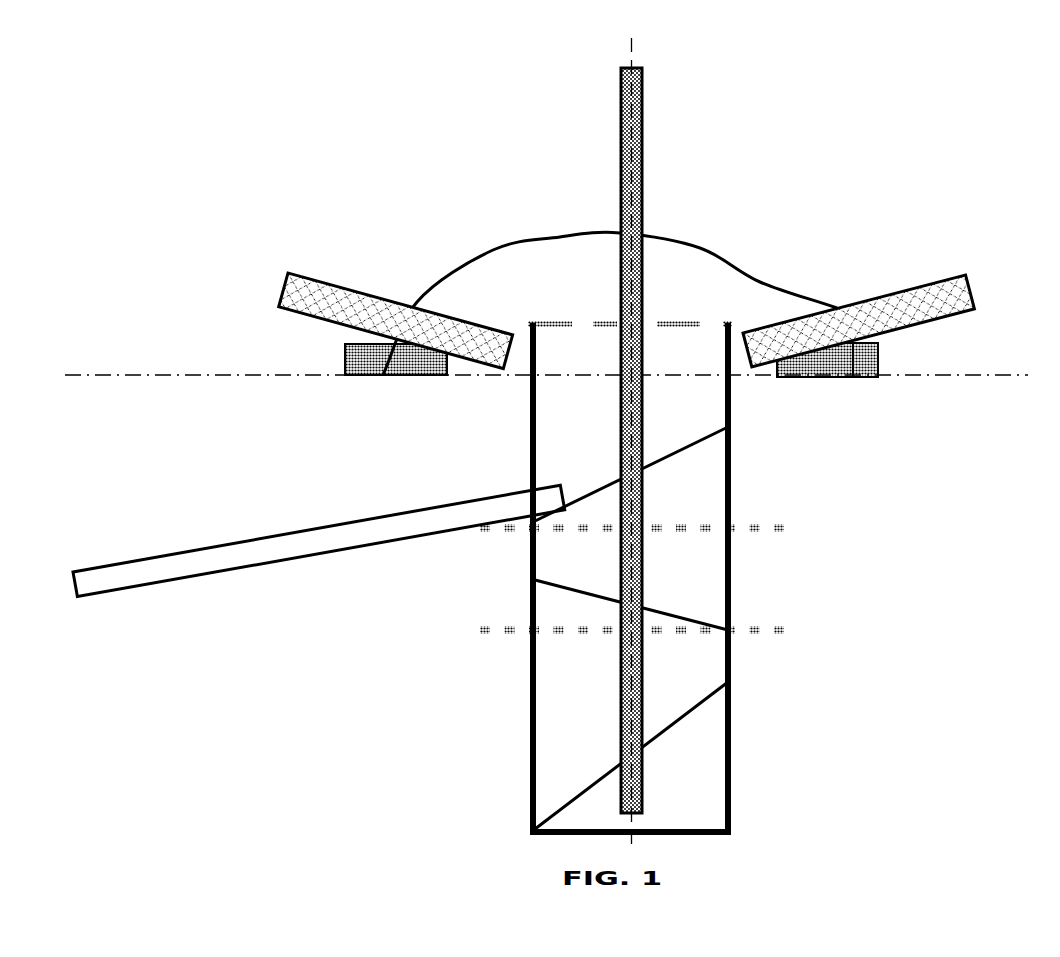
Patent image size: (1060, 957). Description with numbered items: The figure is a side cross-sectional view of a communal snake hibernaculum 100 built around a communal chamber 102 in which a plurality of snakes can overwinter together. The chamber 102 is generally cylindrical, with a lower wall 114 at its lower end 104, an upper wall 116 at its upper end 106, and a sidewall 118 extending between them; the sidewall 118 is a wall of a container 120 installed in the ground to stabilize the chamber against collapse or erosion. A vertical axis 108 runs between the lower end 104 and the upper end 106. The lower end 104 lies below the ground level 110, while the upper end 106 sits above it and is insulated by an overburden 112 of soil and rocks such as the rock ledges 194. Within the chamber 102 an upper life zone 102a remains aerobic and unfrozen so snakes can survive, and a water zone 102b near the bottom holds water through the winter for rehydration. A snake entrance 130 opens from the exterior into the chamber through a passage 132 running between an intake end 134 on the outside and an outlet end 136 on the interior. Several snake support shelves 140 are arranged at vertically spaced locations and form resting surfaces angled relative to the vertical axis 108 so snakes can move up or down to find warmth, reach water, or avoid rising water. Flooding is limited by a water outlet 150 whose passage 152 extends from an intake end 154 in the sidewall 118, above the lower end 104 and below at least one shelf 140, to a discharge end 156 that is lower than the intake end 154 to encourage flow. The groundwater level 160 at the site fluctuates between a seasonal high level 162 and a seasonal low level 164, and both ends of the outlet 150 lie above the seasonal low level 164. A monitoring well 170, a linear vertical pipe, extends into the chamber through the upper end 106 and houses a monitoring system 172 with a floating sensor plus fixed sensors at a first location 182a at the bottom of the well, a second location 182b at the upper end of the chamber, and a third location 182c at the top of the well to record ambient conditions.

The communal snake hibernaculum 100 is at (330, 213).
The communal chamber 102 is at (626, 537).
The life zone 102a is at (568, 470).
The water zone 102b is at (568, 682).
The lower end 104 is at (750, 824).
The upper end 106 is at (728, 310).
The vertical axis 108 is at (632, 215).
The ground level 110 is at (983, 375).
The overburden 112 is at (717, 253).
The lower wall 114 is at (693, 835).
The upper wall 116 is at (572, 238).
The sidewall 118 is at (732, 722).
The container 120 is at (530, 748).
The snake entrance 130 is at (623, 397).
The passage 132 is at (830, 358).
The intake end 134 is at (887, 388).
The outlet end 136 is at (775, 388).
The snake support shelves 140 is at (672, 455).
The water outlet 150 is at (330, 522).
The passage 152 is at (200, 563).
The intake end 154 is at (518, 513).
The discharge end 156 is at (97, 550).
The groundwater level 160 is at (661, 544).
The seasonal high level 162 is at (773, 527).
The seasonal low level 164 is at (773, 628).
The monitoring well 170 is at (642, 92).
The monitoring system 172 is at (602, 137).
The first location 182a is at (648, 777).
The second location 182b is at (648, 337).
The third location 182c is at (648, 120).
The rock ledges 194 is at (350, 290).